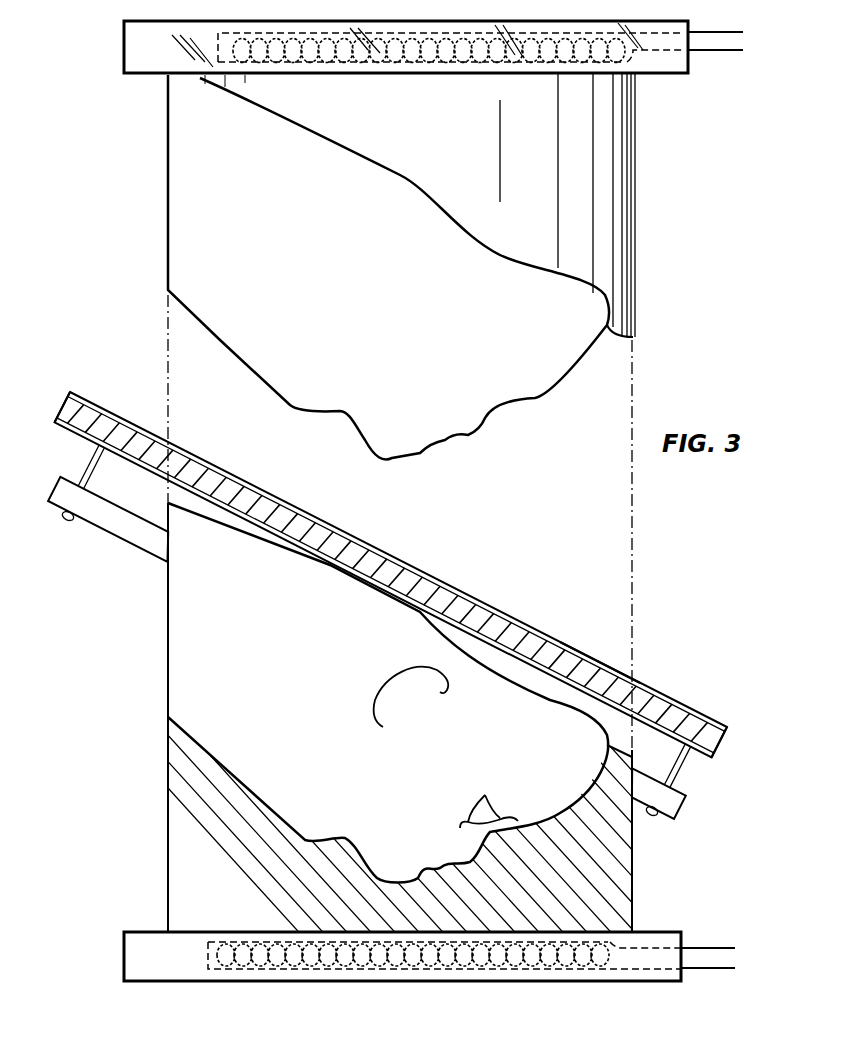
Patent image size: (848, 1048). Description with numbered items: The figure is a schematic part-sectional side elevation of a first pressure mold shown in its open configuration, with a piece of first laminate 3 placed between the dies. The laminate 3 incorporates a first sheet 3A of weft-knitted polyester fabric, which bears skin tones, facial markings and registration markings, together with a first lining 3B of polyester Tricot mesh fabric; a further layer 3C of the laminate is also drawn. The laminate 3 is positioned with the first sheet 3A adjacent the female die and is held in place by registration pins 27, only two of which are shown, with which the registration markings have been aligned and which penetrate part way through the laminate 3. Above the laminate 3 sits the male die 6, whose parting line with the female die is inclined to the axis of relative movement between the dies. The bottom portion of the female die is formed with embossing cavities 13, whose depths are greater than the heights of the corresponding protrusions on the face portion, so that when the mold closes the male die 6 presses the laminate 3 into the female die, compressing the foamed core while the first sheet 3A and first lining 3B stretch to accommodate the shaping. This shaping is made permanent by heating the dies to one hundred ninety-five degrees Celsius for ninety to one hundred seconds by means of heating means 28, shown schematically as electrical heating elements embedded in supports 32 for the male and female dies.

The first laminate 3 is at (67, 406).
The first sheet 3A is at (153, 478).
The first lining 3B is at (600, 662).
The plate right section 3C is at (723, 740).
The male die 6 is at (370, 318).
The embossing cavities 13 is at (388, 882).
The registration pins 27 is at (88, 466).
The heating means 28 is at (747, 4).
The supports 32 is at (150, 62).